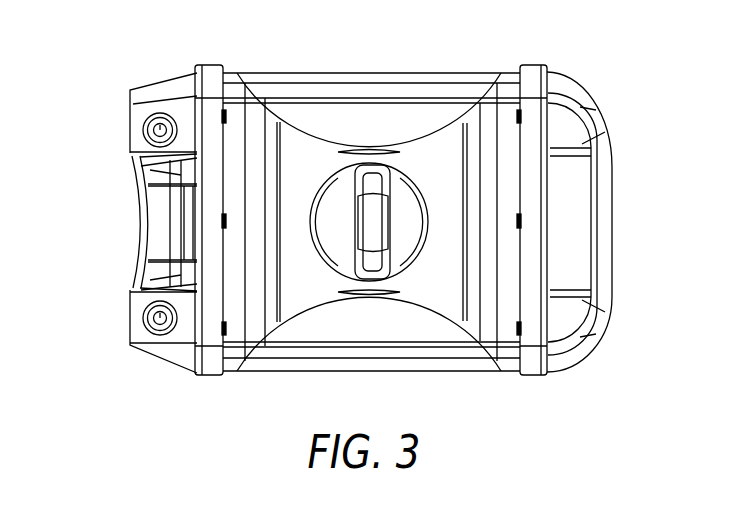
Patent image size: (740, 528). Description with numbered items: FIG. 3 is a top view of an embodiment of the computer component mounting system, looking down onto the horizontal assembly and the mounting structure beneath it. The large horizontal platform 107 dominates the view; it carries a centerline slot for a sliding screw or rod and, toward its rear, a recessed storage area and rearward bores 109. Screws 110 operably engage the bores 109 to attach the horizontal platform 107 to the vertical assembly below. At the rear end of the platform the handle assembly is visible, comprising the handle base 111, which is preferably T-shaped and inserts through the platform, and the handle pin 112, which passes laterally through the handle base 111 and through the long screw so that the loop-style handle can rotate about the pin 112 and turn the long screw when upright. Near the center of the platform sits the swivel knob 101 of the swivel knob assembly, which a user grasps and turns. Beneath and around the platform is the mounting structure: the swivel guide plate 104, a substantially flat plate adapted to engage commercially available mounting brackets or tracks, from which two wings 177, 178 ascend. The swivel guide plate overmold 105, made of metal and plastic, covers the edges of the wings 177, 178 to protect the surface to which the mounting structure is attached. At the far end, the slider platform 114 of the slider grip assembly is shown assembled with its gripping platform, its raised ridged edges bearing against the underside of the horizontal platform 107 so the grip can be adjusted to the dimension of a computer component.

The swivel knob 101 is at (372, 178).
The swivel guide plate 104 is at (301, 276).
The swivel guide plate overmold 105 is at (213, 87).
The horizontal platform 107 is at (340, 120).
The rearward bores 109 is at (138, 134).
The screws 110 is at (157, 125).
The handle base 111 is at (160, 217).
The handle pin 112 is at (183, 170).
The slider platform 114 is at (602, 121).
The wing 177 is at (255, 127).
The wing 178 is at (487, 92).